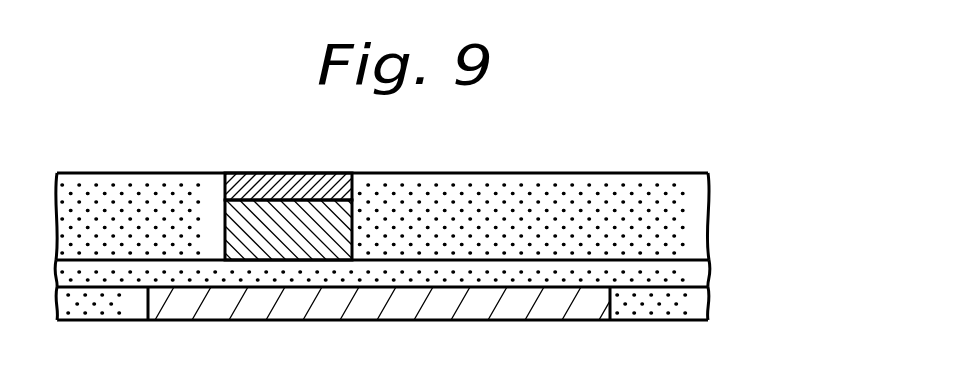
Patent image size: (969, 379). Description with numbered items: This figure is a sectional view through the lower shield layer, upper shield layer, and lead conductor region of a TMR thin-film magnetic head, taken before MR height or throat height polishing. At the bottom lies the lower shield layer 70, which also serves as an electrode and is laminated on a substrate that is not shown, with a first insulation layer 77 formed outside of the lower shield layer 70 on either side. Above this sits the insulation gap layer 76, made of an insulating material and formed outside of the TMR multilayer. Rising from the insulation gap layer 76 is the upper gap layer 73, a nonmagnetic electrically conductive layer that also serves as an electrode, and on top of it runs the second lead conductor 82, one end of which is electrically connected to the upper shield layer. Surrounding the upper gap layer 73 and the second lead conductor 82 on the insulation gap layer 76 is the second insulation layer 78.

The lower shield layer 70 is at (422, 302).
The upper gap layer 73 is at (313, 227).
The insulation gap layer 76 is at (697, 274).
The first insulation layer 77 is at (697, 305).
The second insulation layer 78 is at (700, 214).
The second lead conductor 82 is at (240, 172).